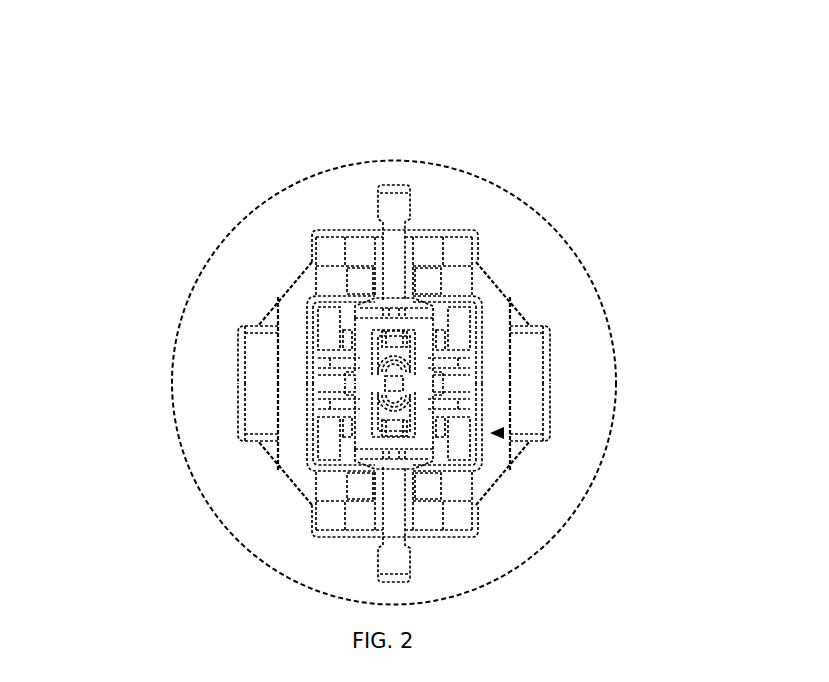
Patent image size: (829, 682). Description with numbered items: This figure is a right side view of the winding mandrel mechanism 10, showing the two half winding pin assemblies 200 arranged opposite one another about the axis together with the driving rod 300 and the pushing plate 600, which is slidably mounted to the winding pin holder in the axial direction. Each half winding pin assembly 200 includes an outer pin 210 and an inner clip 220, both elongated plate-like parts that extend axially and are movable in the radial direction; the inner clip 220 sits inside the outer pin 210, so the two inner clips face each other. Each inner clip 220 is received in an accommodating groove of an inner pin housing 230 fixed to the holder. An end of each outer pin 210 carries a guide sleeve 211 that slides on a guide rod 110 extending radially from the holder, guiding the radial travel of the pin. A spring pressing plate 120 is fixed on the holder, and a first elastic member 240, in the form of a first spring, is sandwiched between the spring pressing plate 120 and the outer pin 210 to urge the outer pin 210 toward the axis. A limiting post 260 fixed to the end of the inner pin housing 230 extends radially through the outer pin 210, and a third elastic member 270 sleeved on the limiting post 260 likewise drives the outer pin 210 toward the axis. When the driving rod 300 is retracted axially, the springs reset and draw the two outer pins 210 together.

The winding mandrel mechanism 10 is at (110, 40).
The guide rod 110 is at (392, 428).
The spring pressing plate 120 is at (428, 245).
The half winding pin assembly 200 is at (530, 440).
The outer pin 210 is at (450, 337).
The guide sleeve 211 is at (333, 372).
The inner clip 220 is at (503, 433).
The inner pin housing 230 is at (418, 352).
The first elastic member 240 is at (432, 288).
The limiting post 260 is at (385, 300).
The third elastic member 270 is at (388, 340).
The driving rod 300 is at (282, 335).
The pushing plate 600 is at (399, 182).